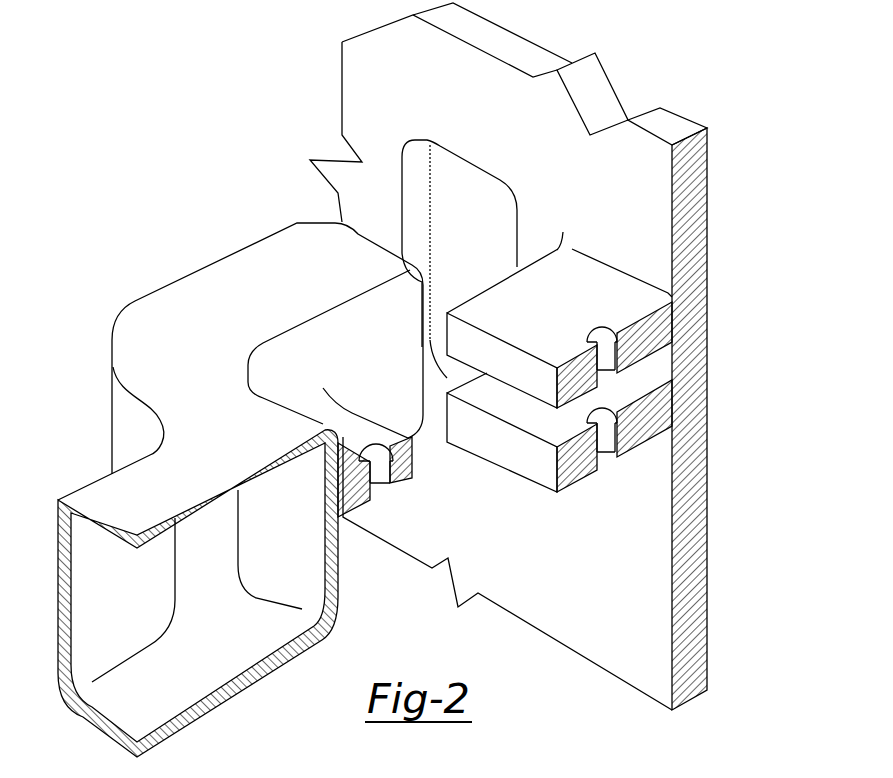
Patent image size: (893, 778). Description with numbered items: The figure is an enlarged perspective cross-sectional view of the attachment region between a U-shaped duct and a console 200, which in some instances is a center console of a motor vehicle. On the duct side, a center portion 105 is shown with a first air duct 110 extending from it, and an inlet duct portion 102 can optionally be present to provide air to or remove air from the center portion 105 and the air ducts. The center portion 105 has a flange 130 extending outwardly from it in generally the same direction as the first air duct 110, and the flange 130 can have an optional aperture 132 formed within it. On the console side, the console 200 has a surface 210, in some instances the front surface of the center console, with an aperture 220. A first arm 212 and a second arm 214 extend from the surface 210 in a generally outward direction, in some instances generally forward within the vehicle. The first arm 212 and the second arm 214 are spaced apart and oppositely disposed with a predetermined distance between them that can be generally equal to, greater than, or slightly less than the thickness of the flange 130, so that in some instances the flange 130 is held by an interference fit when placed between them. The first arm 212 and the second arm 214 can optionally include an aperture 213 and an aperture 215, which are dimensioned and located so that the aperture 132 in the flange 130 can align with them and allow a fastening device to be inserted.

The inlet duct portion 102 is at (181, 576).
The center portion 105 is at (250, 424).
The first air duct 110 is at (240, 343).
The flange 130 is at (337, 417).
The aperture 132 is at (372, 440).
The console 200 is at (562, 356).
The surface 210 is at (654, 152).
The first arm 212 is at (577, 307).
The aperture 213 is at (600, 327).
The second arm 214 is at (507, 472).
The aperture 215 is at (607, 457).
The aperture 220 is at (457, 157).